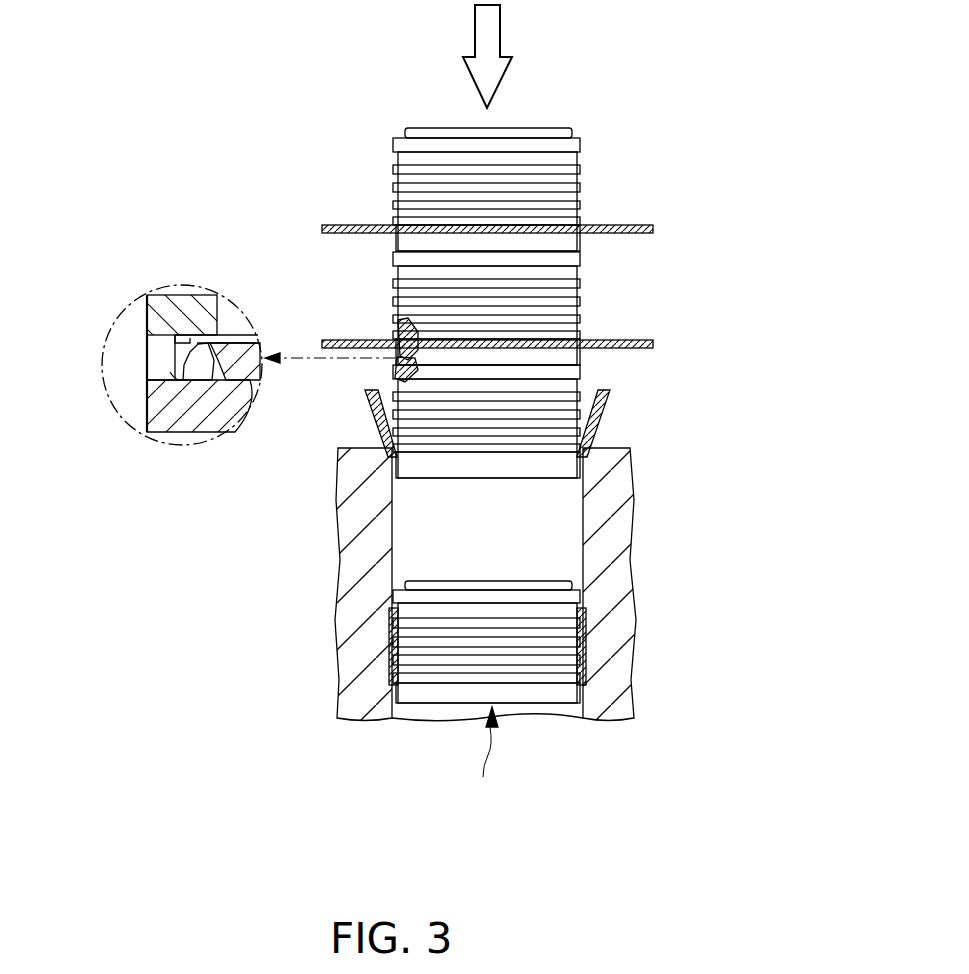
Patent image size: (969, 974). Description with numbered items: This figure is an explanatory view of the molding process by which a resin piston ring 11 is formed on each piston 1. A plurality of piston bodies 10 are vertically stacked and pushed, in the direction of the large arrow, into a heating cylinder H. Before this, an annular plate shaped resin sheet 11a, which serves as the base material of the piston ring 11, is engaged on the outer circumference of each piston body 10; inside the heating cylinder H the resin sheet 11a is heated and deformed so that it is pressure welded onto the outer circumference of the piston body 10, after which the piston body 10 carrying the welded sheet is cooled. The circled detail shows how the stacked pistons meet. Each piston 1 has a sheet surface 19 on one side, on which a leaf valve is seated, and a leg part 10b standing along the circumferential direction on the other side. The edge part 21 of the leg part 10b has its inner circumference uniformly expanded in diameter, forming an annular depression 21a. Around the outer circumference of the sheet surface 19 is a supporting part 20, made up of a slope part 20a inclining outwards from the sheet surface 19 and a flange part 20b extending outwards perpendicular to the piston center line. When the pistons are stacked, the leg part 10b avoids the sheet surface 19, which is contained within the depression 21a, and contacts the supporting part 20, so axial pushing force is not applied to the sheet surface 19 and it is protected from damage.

The piston 1 is at (479, 753).
The piston body 10 is at (580, 168).
The leg part 10b is at (398, 322).
The piston ring 11 is at (583, 663).
The resin sheet 11a is at (632, 227).
The heating cylinder H is at (622, 548).
The sheet surface 19 is at (210, 345).
The supporting part 20 is at (141, 414).
The slope part 20a is at (186, 382).
The flange part 20b is at (155, 372).
The edge part 21 is at (145, 348).
The depression 21a is at (193, 333).